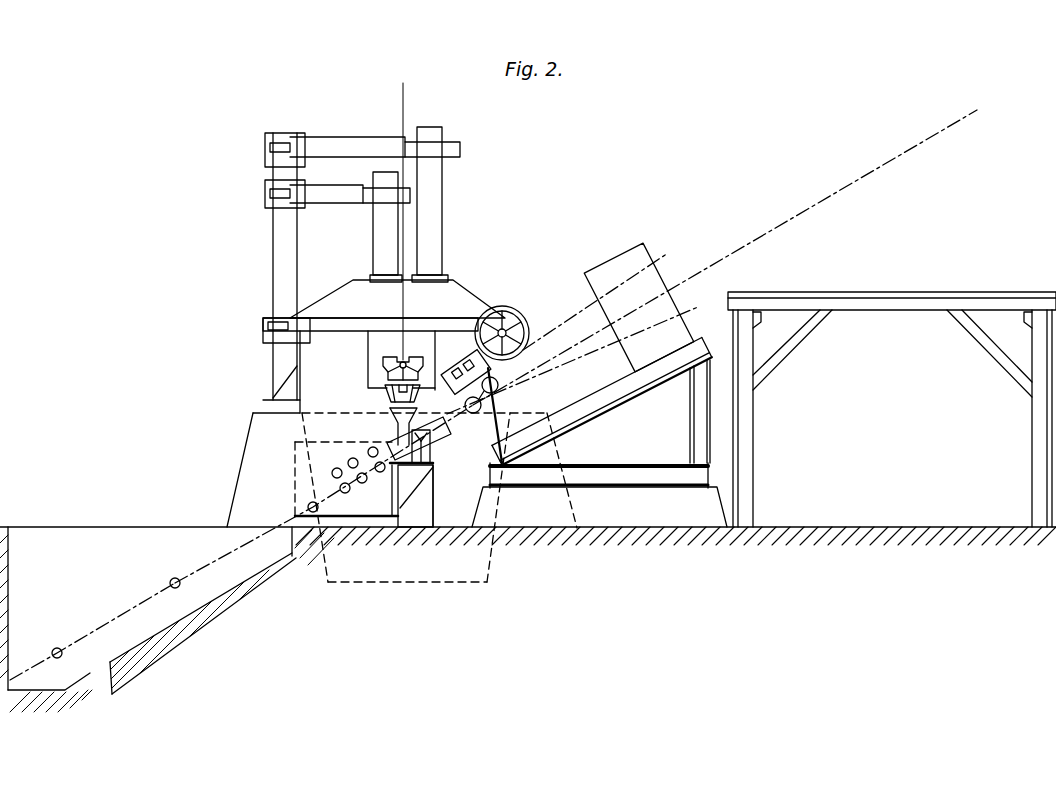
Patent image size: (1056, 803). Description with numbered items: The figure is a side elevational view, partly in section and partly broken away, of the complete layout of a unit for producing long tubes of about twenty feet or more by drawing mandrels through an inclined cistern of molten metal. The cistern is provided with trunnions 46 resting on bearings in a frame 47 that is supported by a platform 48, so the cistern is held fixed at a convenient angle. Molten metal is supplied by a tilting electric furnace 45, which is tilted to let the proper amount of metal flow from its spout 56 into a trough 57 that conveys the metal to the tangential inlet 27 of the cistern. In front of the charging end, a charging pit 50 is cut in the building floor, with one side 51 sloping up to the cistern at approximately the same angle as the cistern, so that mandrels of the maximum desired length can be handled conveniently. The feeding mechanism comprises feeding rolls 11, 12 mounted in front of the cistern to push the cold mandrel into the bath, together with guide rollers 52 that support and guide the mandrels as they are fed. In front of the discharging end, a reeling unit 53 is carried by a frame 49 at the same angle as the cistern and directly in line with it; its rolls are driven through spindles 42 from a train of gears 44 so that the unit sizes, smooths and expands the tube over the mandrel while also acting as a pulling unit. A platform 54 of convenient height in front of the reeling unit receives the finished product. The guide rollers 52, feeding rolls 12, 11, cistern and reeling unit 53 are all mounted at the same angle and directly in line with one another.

The feeding roll 11 is at (324, 494).
The feeding roll 12 is at (352, 470).
The tangential inlet 27 is at (392, 424).
The spindle 42 is at (562, 320).
The train of gears 44 is at (639, 307).
The electric furnace 45 is at (452, 280).
The trunnion 46 is at (464, 402).
The frame 47 is at (432, 448).
The platform 48 is at (430, 467).
The frame 49 is at (640, 407).
The charging pit 50 is at (46, 619).
The sloping side 51 is at (176, 620).
The guide rollers 52 is at (308, 505).
The reeling unit 53 is at (465, 371).
The platform 54 is at (892, 399).
The spout 56 is at (383, 366).
The trough 57 is at (386, 392).